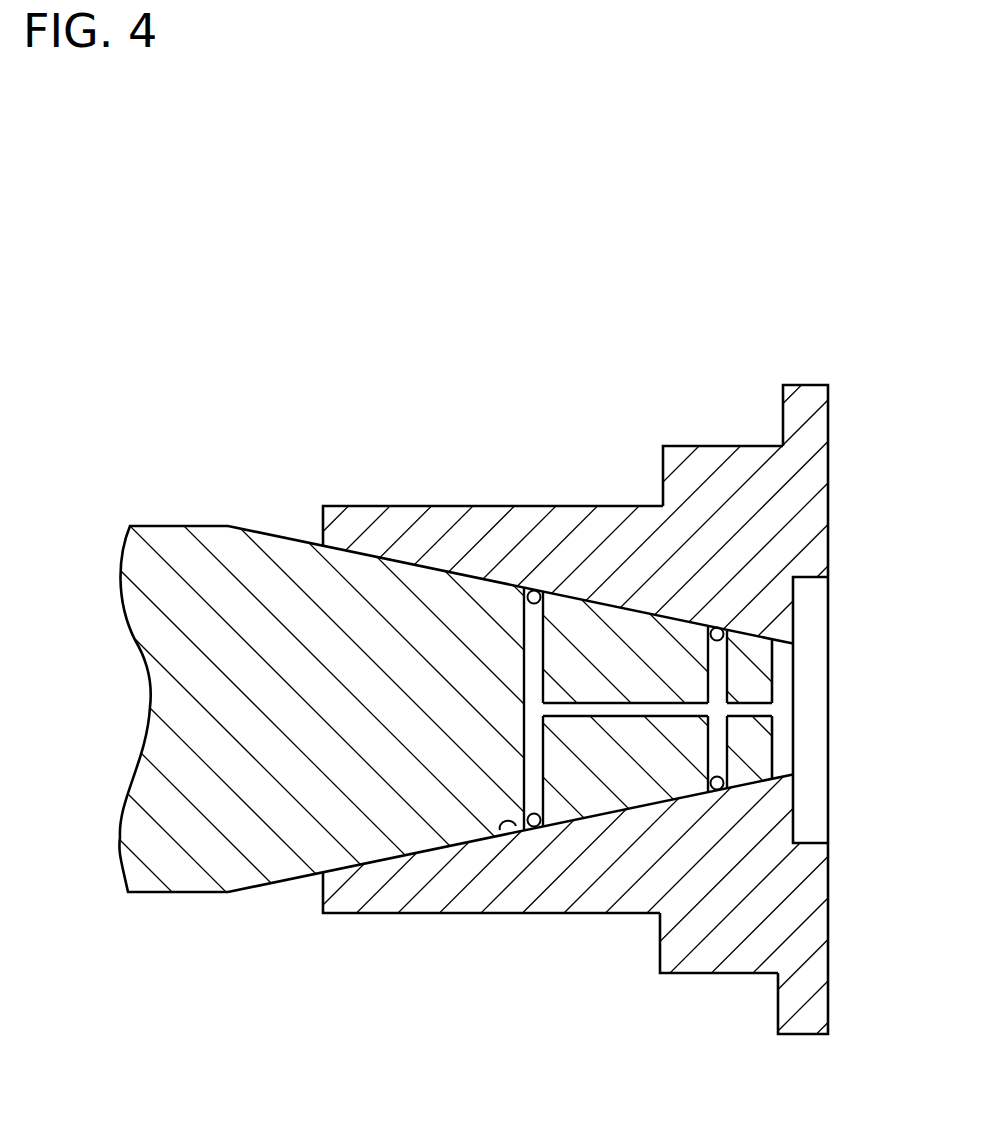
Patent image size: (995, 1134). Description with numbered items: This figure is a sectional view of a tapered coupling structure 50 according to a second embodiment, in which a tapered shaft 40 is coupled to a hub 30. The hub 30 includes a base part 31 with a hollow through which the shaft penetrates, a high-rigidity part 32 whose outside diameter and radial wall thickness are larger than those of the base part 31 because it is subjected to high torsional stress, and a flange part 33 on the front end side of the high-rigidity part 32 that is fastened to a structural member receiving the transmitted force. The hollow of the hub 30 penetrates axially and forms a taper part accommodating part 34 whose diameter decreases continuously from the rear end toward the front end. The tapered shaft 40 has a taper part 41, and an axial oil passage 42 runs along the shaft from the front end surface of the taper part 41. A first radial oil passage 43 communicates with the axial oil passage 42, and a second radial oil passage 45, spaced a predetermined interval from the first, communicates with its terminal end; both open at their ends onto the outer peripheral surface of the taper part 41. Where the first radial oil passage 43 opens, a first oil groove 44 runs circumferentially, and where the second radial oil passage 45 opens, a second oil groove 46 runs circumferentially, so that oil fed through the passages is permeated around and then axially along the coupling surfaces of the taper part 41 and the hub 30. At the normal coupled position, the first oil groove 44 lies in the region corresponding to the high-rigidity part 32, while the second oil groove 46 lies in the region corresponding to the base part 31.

The coupling structure 50 is at (313, 433).
The tapered shaft 40 is at (207, 518).
The taper part 41 is at (400, 560).
The axial oil passage 42 is at (740, 707).
The first radial oil passage 43 is at (718, 663).
The first oil groove 44 is at (712, 628).
The second radial oil passage 45 is at (537, 632).
The second oil groove 46 is at (534, 591).
The hub 30 is at (437, 922).
The base part 31 is at (628, 914).
The high-rigidity part 32 is at (722, 974).
The flange part 33 is at (803, 1035).
The taper part accommodating part 34 is at (516, 834).